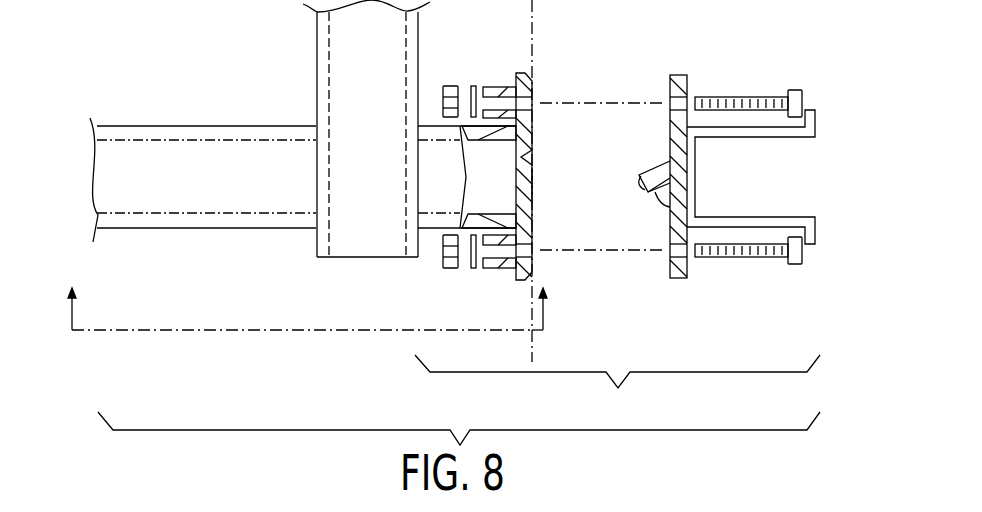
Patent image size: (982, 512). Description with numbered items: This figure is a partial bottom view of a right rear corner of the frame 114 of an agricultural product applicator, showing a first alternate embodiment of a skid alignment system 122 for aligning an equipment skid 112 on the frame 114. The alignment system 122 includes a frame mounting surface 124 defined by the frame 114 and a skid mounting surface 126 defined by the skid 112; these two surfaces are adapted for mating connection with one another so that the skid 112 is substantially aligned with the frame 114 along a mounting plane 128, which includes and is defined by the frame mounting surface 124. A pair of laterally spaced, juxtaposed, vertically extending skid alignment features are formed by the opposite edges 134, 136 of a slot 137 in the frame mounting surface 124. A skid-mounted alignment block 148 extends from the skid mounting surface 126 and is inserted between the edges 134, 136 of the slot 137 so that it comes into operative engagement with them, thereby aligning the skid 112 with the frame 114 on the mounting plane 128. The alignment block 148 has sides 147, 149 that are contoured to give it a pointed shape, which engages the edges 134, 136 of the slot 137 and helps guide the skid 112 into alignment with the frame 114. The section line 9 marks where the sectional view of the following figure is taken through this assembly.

The section line 9- 9 is at (307, 307).
The equipment skid 112 is at (750, 233).
The frame 114 is at (205, 229).
The skid alignment system 122 is at (617, 387).
The frame mounting surface 124 is at (534, 86).
The skid mounting surface 126 is at (670, 270).
The mounting plane 128 is at (534, 36).
The edge of slot 134 is at (534, 158).
The edge of slot 136 is at (522, 191).
The slot 137 is at (534, 174).
The side of alignment block 147 is at (652, 165).
The skid alignment block 148 is at (690, 207).
The side of alignment block 149 is at (636, 180).